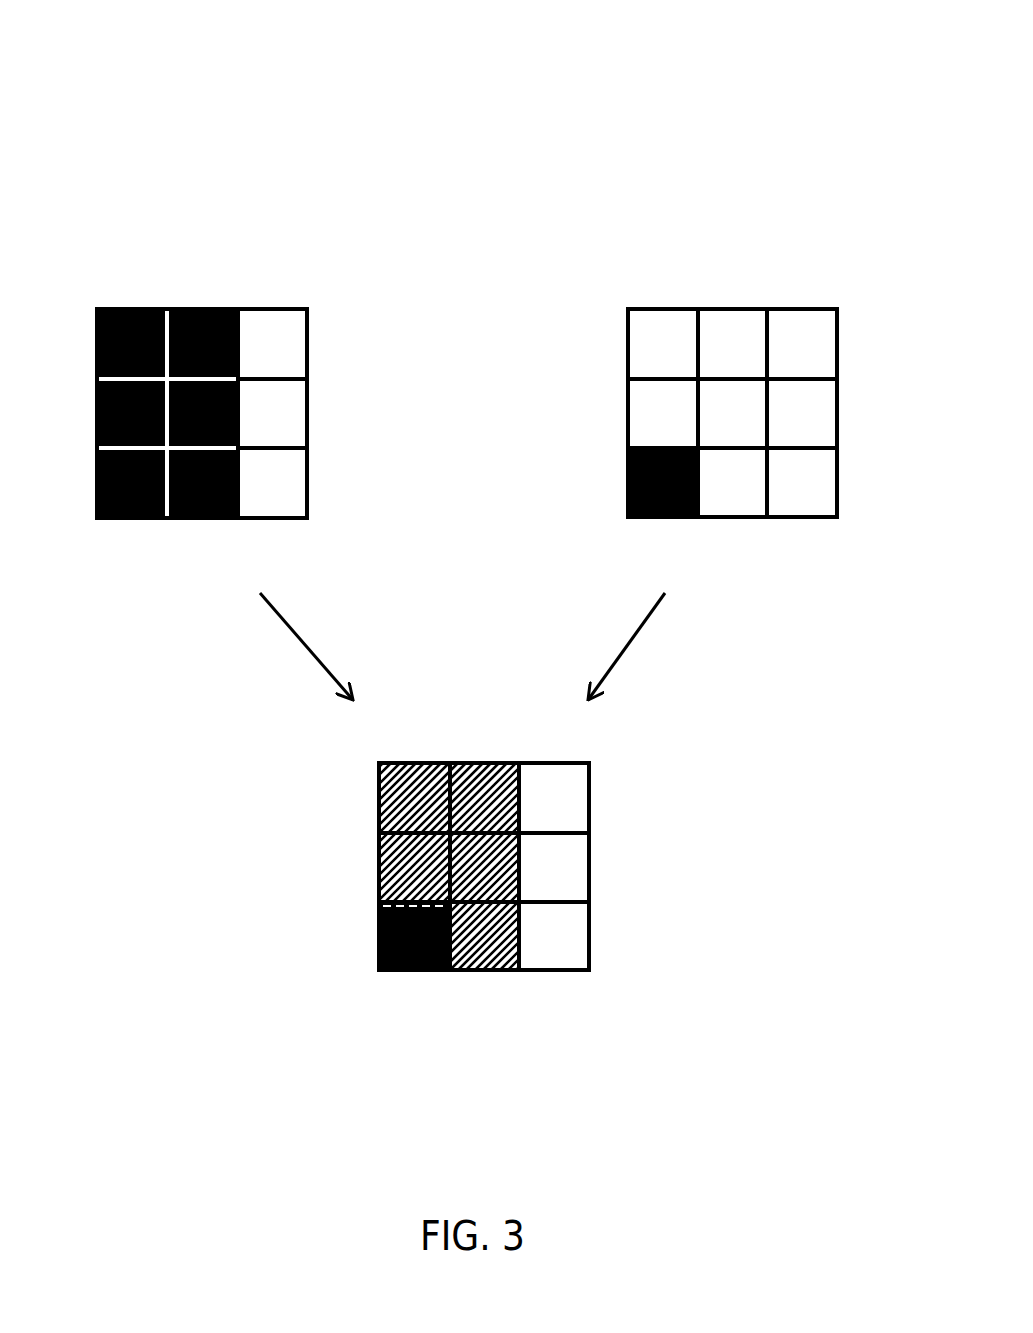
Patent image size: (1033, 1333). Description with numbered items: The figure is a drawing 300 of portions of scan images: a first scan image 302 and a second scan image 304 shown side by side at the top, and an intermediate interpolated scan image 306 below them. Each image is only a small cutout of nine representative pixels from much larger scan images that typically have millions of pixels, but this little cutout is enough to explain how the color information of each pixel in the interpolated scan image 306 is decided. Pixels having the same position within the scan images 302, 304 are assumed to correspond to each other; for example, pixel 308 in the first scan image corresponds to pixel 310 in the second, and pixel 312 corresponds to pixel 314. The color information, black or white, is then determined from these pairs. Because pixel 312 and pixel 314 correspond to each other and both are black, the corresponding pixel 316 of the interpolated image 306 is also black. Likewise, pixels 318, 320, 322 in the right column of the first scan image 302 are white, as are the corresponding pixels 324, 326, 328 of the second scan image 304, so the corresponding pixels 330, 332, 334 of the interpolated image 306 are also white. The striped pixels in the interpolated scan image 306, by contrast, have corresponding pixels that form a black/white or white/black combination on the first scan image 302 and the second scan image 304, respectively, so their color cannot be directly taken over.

The drawing 300 is at (447, 108).
The first scan image 302 is at (235, 238).
The second scan image 304 is at (725, 237).
The intermediate interpolated scan image 306 is at (483, 722).
The pixel 308 is at (132, 308).
The pixel 310 is at (658, 297).
The pixel 312 is at (87, 500).
The pixel 314 is at (620, 482).
The pixel 316 is at (365, 935).
The pixel 318 is at (283, 362).
The pixel 320 is at (283, 428).
The pixel 322 is at (283, 495).
The pixel 324 is at (793, 362).
The pixel 326 is at (793, 409).
The pixel 328 is at (793, 477).
The pixel 330 is at (561, 807).
The pixel 332 is at (561, 872).
The pixel 334 is at (561, 940).